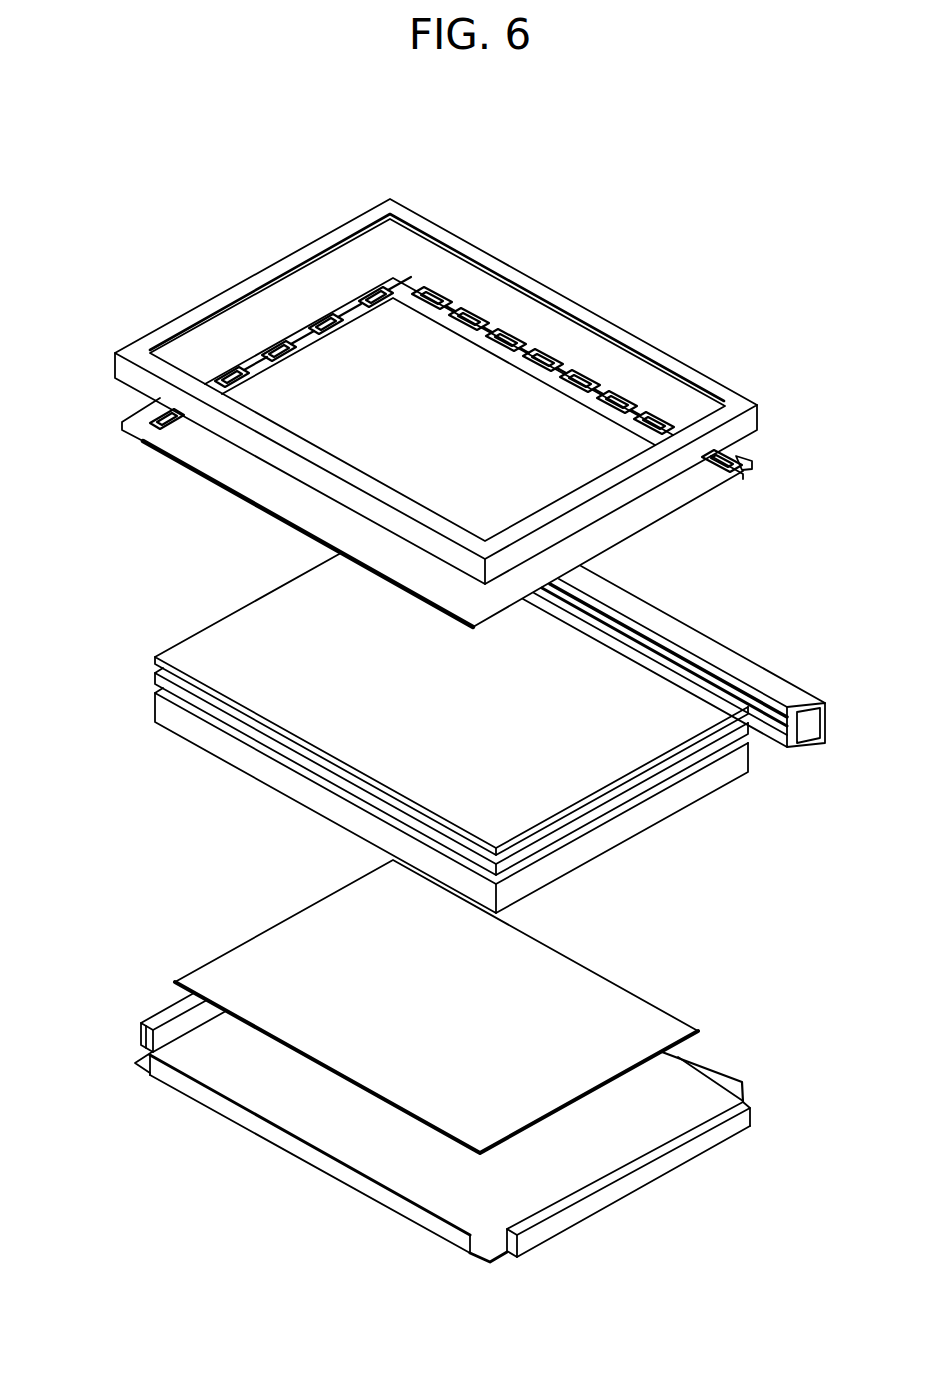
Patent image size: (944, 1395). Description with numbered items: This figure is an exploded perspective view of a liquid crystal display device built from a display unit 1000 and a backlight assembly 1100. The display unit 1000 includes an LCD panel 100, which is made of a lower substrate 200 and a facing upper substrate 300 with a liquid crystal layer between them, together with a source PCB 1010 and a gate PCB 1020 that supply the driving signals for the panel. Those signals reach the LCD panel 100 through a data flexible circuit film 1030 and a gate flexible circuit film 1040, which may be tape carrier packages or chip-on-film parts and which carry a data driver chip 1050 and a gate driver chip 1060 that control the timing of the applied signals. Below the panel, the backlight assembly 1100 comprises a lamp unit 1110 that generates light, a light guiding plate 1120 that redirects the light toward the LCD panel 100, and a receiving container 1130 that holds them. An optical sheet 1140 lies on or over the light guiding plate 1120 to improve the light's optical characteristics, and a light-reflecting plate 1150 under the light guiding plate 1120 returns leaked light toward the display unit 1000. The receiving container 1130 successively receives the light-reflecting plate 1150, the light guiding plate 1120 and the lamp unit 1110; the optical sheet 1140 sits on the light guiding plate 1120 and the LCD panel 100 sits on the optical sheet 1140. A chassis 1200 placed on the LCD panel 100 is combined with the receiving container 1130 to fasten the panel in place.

The display unit 1000 is at (390, 412).
The liquid crystal display panel 100 is at (390, 412).
The lower substrate 200 is at (414, 338).
The upper substrate 300 is at (168, 446).
The source printed circuit board 1010 is at (527, 342).
The gate printed circuit board 1020 is at (297, 330).
The data flexible circuit film 1030 is at (557, 357).
The gate flexible circuit film 1040 is at (330, 315).
The data driver chip 1050 is at (483, 310).
The gate driver chip 1060 is at (367, 280).
The chassis 1200 is at (468, 252).
The backlight assembly 1100 is at (478, 907).
The lamp unit 1110 is at (745, 637).
The light guiding plate 1120 is at (157, 705).
The optical sheet 1140 is at (158, 683).
The light-reflecting plate 1150 is at (190, 977).
The receiving container 1130 is at (202, 1095).